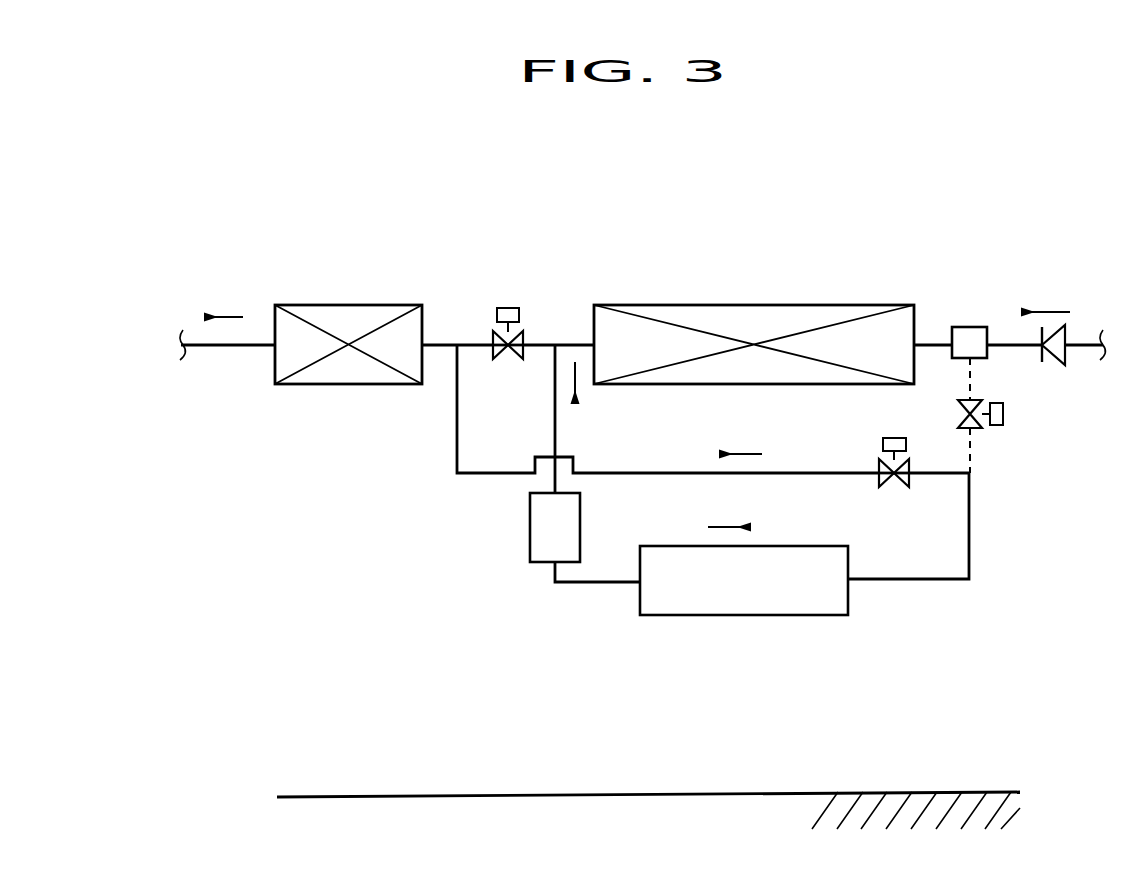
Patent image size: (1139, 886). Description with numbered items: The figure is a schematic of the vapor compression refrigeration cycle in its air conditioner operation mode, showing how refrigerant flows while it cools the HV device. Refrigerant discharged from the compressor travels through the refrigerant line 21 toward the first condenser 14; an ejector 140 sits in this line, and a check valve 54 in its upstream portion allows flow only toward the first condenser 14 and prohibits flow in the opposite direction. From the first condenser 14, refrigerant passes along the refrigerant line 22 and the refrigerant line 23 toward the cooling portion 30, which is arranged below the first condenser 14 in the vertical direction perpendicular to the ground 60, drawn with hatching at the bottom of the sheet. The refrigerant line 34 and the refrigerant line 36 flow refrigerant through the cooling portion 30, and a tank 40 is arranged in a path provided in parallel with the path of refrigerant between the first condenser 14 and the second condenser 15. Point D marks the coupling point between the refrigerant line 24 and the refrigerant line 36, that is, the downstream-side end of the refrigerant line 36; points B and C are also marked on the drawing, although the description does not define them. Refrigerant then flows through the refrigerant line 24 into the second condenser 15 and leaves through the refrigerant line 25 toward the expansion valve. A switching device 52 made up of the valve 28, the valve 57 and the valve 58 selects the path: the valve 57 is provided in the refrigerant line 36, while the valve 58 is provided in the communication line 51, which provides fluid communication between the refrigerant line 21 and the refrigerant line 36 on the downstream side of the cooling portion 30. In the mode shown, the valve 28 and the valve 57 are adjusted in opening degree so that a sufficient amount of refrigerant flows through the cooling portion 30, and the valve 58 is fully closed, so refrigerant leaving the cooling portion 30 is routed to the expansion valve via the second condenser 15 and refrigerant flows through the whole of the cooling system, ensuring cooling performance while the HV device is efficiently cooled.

The first condenser 14 is at (752, 317).
The second condenser 15 is at (348, 318).
The refrigerant line 21 is at (1009, 344).
The refrigerant line 22 is at (574, 344).
The refrigerant line 23 is at (554, 400).
The refrigerant line 24 is at (437, 343).
The refrigerant line 25 is at (228, 345).
The valve 28 is at (510, 308).
The cooling portion 30 is at (749, 590).
The refrigerant line 34 is at (612, 583).
The refrigerant line 36 is at (457, 435).
The tank 40 is at (546, 533).
The communication line 51 is at (972, 375).
The switching device 52 is at (814, 388).
The check valve 54 is at (1062, 365).
The valve 57 is at (889, 488).
The valve 58 is at (1005, 415).
The ground 60 is at (733, 812).
The ejector 140 is at (967, 335).
The point B is at (1094, 330).
The point C is at (553, 583).
The point D is at (457, 343).